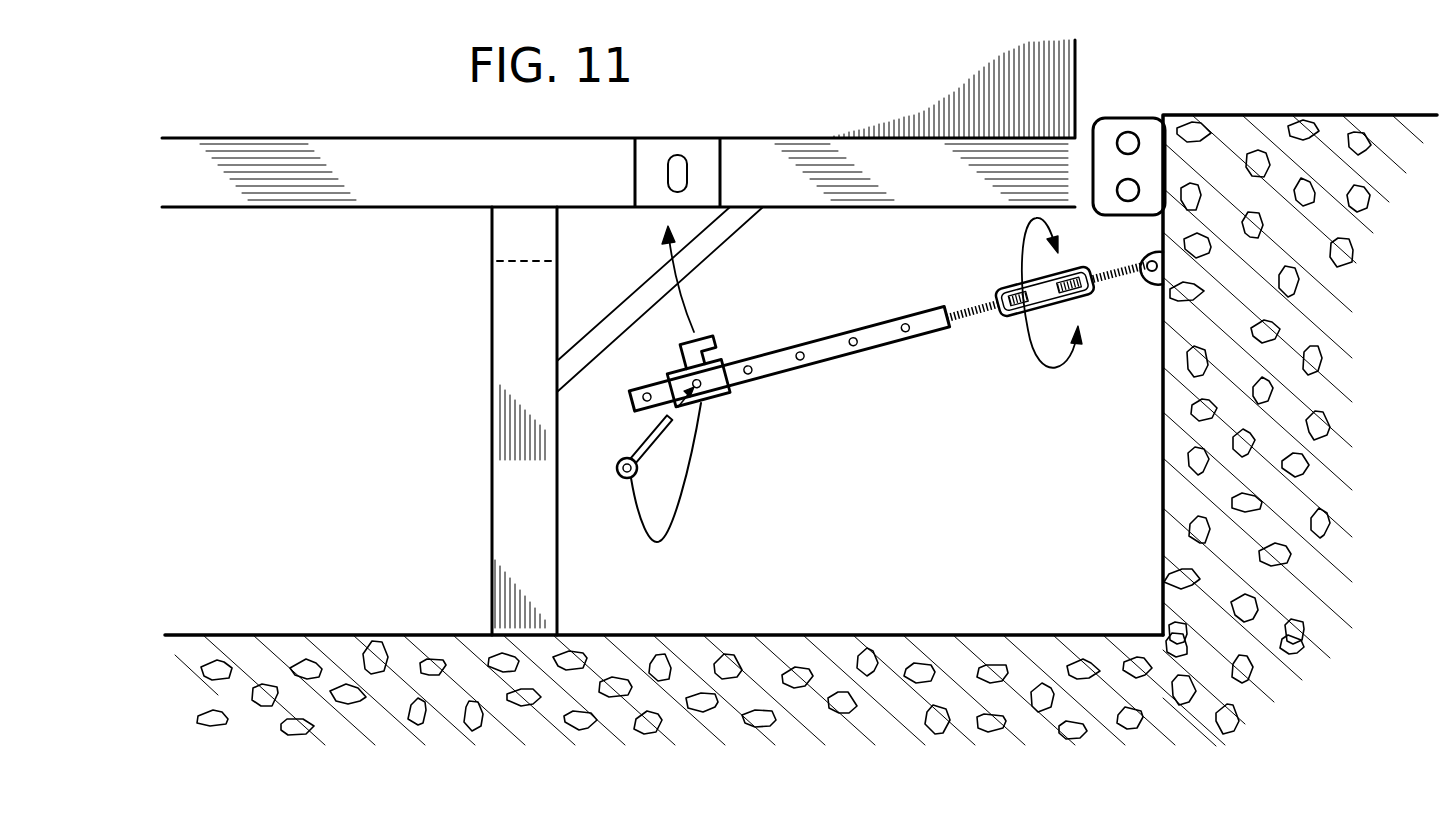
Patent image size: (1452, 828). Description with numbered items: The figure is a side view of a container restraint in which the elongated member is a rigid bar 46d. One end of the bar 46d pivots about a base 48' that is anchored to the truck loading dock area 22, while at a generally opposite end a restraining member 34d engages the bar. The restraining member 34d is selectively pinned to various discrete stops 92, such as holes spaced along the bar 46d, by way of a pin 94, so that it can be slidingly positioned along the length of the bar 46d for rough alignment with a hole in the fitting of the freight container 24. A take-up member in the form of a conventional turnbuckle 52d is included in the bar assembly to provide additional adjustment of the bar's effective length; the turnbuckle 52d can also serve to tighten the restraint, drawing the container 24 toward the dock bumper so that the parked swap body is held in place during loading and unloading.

The truck loading dock area 22 is at (1227, 113).
The freight container 24 is at (1077, 105).
The restraining member 34d is at (712, 344).
The rigid bar 46d is at (836, 360).
The base 48' is at (1138, 314).
The turnbuckle 52d is at (1003, 327).
The discrete stops 92 is at (852, 336).
The pin 94 is at (616, 468).